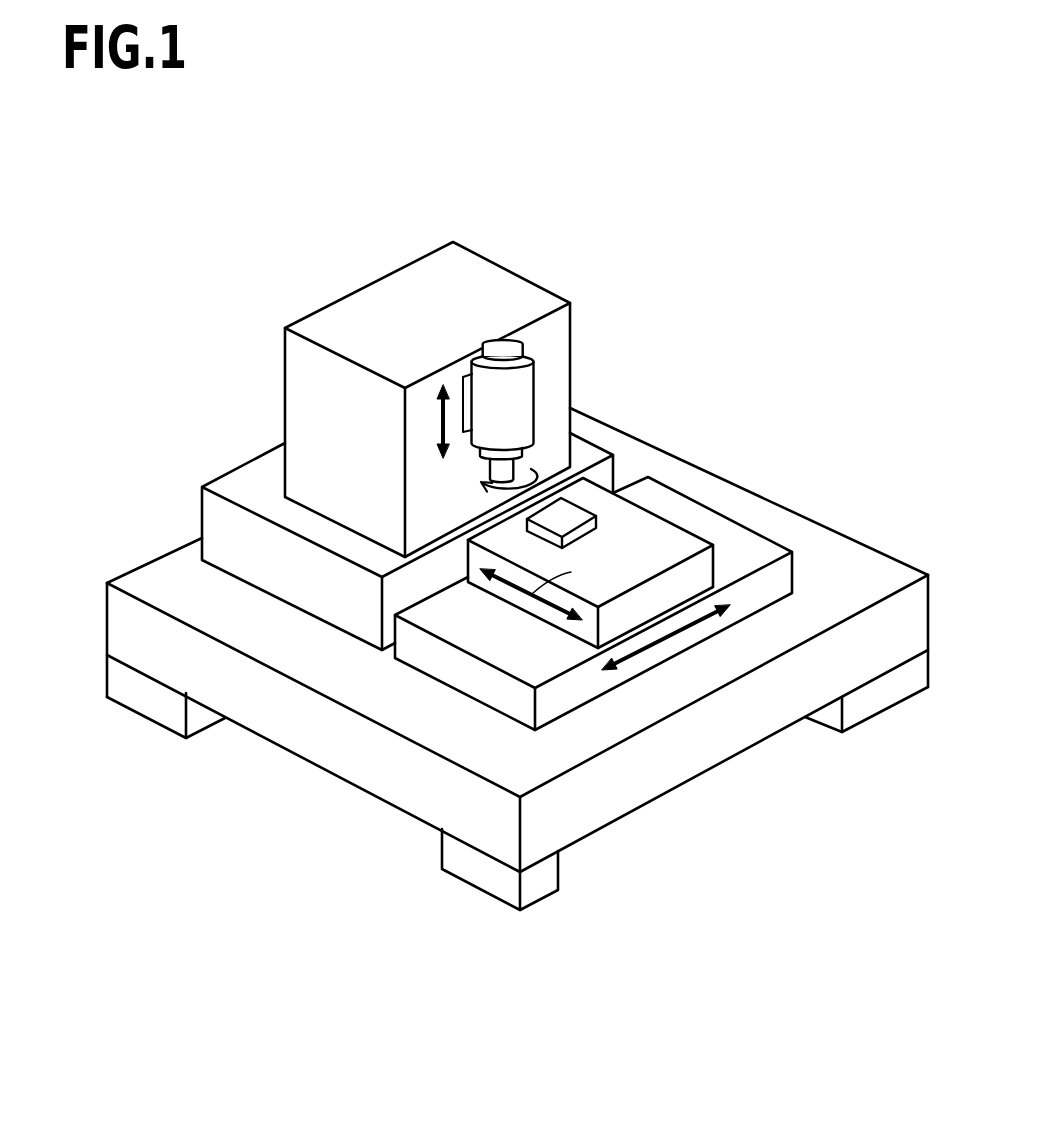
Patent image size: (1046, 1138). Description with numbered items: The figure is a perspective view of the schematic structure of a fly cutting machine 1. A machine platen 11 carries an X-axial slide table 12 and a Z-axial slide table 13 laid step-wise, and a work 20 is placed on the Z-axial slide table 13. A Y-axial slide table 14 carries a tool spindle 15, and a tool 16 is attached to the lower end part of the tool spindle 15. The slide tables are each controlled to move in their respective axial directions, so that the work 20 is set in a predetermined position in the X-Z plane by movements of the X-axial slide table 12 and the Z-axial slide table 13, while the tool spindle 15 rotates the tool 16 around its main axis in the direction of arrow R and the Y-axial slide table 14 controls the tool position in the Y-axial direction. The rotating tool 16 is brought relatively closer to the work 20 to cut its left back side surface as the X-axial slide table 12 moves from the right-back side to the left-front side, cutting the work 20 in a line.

The fly cutting machine 1 is at (590, 233).
The machine platen 11 is at (863, 563).
The X-axial slide table 12 is at (747, 555).
The Z-axial slide table 13 is at (655, 553).
The Y-axial slide table 14 is at (443, 388).
The tool spindle 15 is at (512, 402).
The tool 16 is at (481, 472).
The work 20 is at (567, 517).